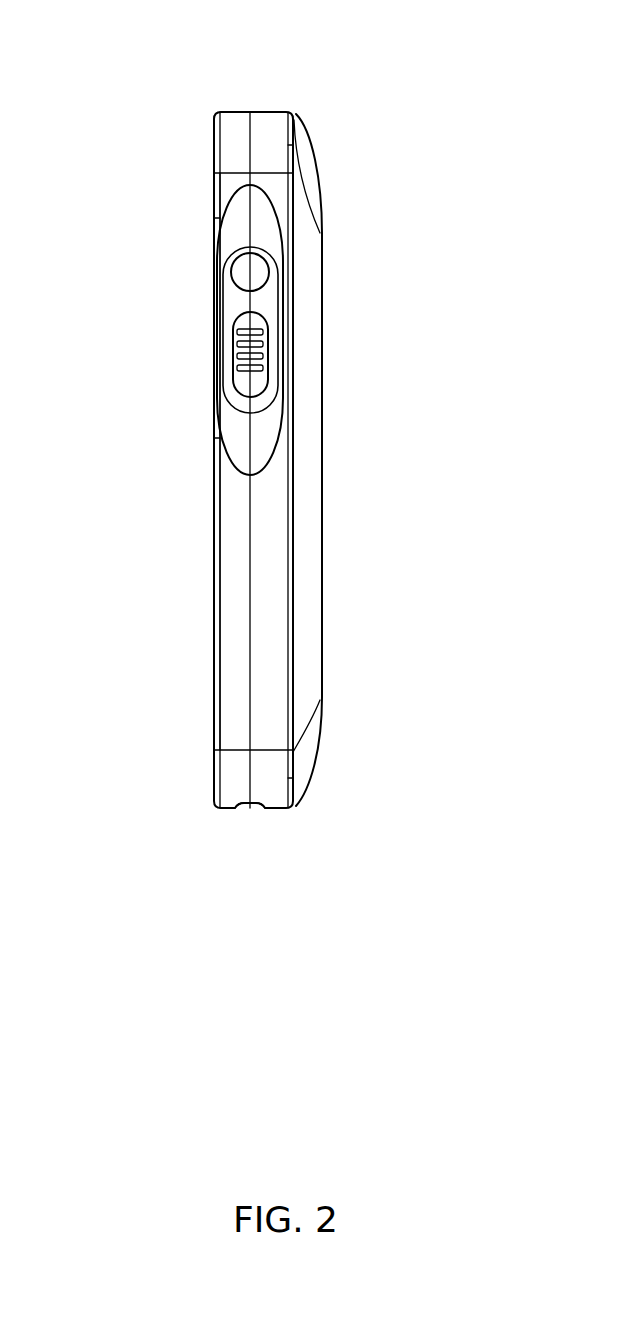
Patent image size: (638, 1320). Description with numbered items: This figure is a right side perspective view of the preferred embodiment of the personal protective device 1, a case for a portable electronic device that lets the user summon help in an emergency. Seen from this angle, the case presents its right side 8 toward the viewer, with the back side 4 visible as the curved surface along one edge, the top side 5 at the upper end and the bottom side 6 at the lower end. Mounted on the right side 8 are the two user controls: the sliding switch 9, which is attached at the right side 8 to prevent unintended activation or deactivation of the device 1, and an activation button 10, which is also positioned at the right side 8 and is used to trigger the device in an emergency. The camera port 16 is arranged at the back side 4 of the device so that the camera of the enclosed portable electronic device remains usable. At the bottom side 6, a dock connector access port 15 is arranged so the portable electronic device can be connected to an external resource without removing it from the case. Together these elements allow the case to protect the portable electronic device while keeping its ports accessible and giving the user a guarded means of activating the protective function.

The personal protective device 1 is at (137, 93).
The back side 4 is at (307, 458).
The top side 5 is at (256, 113).
The bottom side 6 is at (275, 808).
The right side 8 is at (234, 600).
The sliding switch 9 is at (262, 338).
The activation button 10 is at (262, 273).
The dock connector access port 15 is at (241, 808).
The camera port 16 is at (310, 172).